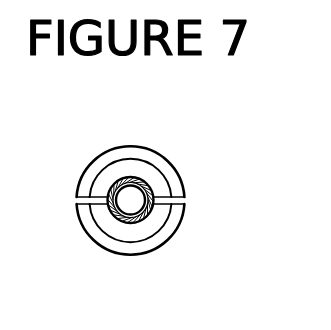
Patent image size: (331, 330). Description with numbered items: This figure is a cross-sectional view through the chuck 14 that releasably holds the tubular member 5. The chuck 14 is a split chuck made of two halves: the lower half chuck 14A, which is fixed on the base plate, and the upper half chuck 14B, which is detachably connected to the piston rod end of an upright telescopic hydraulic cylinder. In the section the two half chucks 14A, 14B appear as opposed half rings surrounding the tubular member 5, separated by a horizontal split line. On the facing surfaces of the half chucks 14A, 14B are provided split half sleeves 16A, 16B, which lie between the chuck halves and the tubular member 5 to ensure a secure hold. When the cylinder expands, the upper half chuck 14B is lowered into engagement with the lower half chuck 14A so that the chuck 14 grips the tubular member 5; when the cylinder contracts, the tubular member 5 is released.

The tubular member 5 is at (145, 221).
The chuck 14 is at (119, 187).
The lower half chuck 14A is at (88, 225).
The upper half chuck 14B is at (165, 165).
The split half sleeve 16A is at (160, 214).
The split half sleeve 16B is at (160, 187).